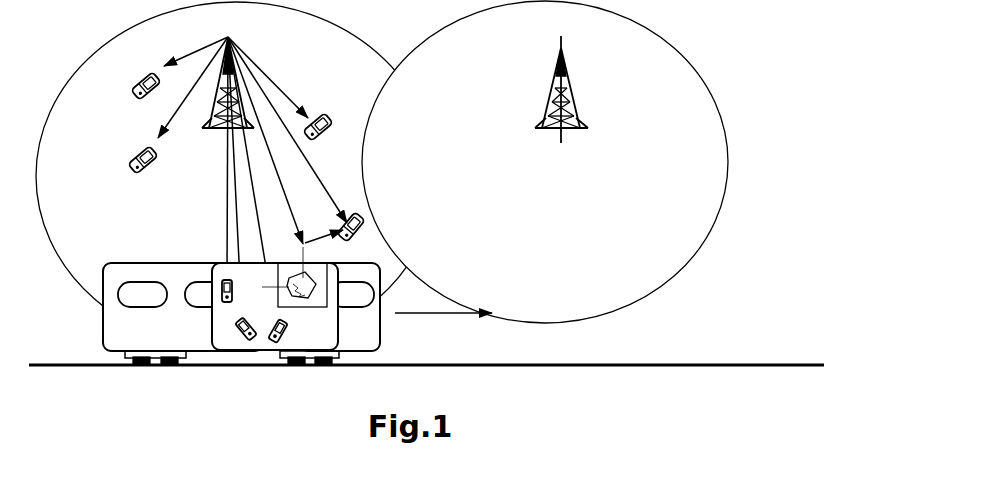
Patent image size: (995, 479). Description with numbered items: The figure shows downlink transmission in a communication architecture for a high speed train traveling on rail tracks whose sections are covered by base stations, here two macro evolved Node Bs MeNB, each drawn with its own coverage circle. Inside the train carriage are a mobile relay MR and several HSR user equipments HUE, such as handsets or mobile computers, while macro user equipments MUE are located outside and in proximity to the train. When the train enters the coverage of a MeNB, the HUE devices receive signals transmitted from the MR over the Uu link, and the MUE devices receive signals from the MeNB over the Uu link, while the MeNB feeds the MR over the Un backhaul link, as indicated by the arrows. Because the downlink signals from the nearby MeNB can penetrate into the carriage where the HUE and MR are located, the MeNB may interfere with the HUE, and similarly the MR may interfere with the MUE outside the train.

The macro evolved Node B MeNB is at (402, 89).
The macro user equipment MUE is at (235, 163).
The HSR user equipment HUE is at (259, 312).
The mobile relay MR is at (302, 264).
The Uu radio interface Uu is at (270, 188).
The Un backhaul interface Un is at (285, 169).